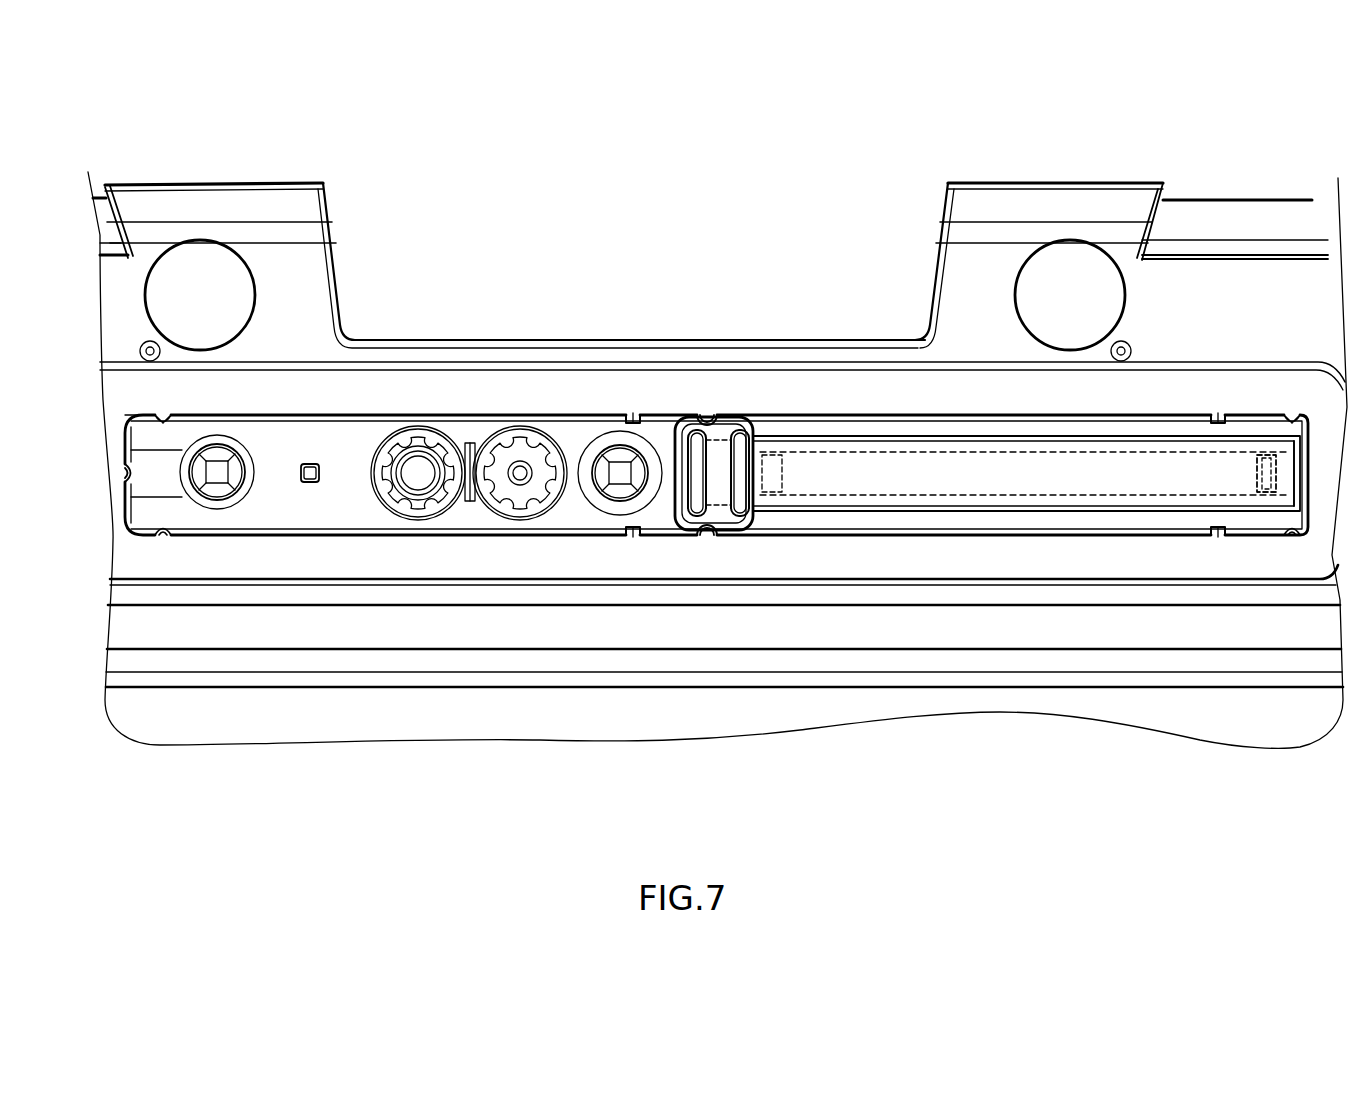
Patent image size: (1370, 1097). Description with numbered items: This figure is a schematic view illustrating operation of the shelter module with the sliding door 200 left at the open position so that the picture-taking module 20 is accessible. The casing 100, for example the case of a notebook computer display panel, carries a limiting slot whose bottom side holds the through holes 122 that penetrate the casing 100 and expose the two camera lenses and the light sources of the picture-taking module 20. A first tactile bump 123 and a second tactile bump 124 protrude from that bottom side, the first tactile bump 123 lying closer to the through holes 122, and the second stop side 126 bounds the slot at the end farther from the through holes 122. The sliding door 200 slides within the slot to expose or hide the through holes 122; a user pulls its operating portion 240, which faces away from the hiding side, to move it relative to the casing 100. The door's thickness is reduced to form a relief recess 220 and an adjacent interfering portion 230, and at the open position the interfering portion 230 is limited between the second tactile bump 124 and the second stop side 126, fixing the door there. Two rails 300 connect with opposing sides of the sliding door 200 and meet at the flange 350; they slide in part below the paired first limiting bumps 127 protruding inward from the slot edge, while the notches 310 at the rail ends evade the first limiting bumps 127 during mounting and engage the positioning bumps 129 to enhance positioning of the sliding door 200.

The casing 100 is at (1313, 628).
The sliding door 200 is at (930, 445).
The rails 300 is at (990, 425).
The picture-taking module 20 is at (413, 482).
The through holes 122 is at (460, 503).
The first tactile bump 123 is at (777, 473).
The second tactile bump 124 is at (1257, 473).
The second stop side 126 is at (1297, 445).
The first limiting bumps 127 is at (633, 413).
The positioning bumps 129 is at (163, 413).
The relief recess 220 is at (1120, 466).
The interfering portion 230 is at (1292, 465).
The operating portion 240 is at (740, 503).
The notch 310 is at (712, 412).
The flange 350 is at (682, 492).